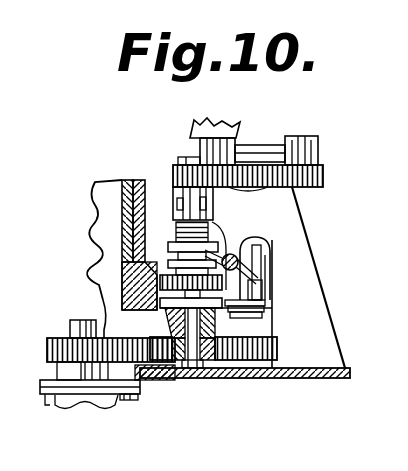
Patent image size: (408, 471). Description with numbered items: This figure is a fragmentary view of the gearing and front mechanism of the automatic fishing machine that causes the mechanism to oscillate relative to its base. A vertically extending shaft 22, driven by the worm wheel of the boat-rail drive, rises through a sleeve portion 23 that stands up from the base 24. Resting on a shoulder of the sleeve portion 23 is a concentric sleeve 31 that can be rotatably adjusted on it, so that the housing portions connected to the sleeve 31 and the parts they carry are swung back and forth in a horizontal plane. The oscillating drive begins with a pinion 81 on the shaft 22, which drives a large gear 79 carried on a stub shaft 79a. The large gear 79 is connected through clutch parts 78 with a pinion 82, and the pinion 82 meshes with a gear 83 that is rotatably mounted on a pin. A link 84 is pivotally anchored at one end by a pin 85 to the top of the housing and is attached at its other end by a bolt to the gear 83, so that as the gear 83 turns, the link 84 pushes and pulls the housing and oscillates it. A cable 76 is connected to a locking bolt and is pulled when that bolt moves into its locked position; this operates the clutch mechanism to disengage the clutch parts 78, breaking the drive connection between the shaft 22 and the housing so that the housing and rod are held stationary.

The vertically extending shaft 22 is at (96, 320).
The sleeve portion 23 is at (121, 233).
The base 24 is at (300, 380).
The sleeve 31 is at (146, 192).
The cable 76 is at (225, 326).
The clutch parts 78 is at (172, 258).
The large gear 79 is at (278, 350).
The stub shaft 79a is at (195, 378).
The pinion 81 is at (53, 338).
The pinion 82 is at (188, 160).
The gear 83 is at (323, 180).
The link 84 is at (264, 150).
The pin 85 is at (222, 126).